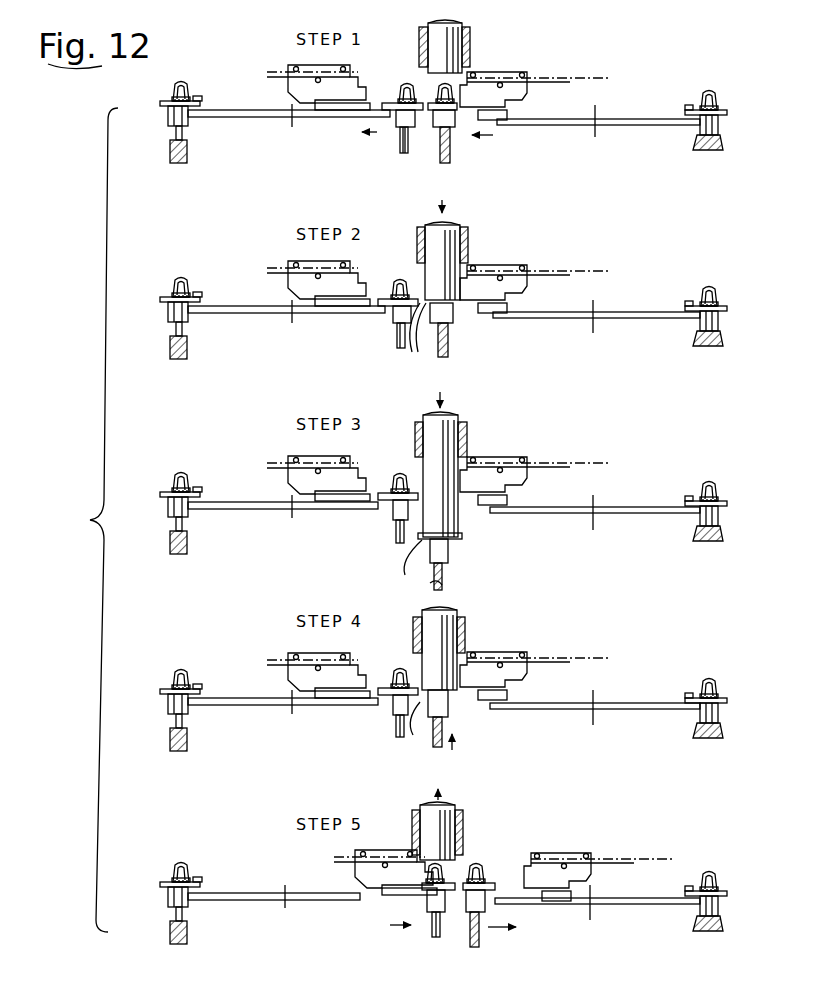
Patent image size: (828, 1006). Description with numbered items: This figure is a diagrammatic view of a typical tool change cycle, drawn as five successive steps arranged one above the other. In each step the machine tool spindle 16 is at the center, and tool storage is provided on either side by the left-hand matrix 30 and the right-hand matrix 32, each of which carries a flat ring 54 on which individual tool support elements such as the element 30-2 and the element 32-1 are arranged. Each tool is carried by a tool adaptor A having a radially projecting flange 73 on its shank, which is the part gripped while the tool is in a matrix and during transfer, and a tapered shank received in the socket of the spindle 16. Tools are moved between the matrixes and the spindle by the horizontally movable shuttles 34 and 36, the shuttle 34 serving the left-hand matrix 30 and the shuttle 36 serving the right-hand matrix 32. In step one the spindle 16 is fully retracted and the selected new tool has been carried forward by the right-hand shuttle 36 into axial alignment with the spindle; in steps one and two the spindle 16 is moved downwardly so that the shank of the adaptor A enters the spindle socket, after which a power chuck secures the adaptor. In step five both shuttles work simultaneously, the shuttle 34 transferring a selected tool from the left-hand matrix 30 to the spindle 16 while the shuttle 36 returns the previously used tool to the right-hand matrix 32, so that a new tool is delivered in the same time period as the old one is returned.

The tool adaptor A is at (169, 116).
The spindle 16 is at (454, 43).
The left-hand matrix 30 is at (229, 121).
The tool support element 30-2 is at (411, 122).
The right-hand matrix 32 is at (630, 127).
The tool support element 32-1 is at (484, 119).
The shuttle 34 is at (286, 92).
The shuttle 36 is at (488, 86).
The flat ring 54 is at (254, 119).
The radially projecting flange 73 is at (425, 100).